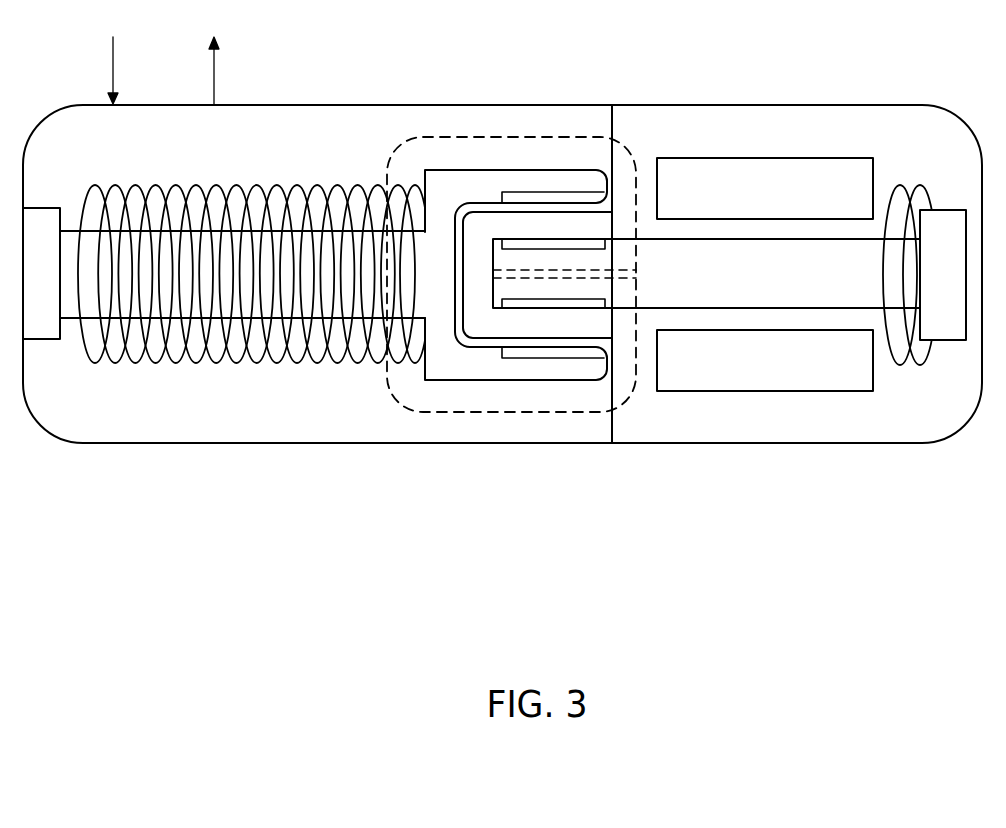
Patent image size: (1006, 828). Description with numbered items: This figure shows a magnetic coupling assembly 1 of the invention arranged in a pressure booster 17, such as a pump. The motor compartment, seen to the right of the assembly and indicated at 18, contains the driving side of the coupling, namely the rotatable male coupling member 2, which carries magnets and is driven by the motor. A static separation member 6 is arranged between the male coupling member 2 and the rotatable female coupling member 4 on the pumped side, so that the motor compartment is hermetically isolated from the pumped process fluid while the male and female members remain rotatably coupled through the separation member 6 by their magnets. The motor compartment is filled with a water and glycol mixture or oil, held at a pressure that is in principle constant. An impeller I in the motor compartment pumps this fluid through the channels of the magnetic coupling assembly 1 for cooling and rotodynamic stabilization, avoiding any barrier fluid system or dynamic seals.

The magnetic coupling assembly 1 is at (478, 137).
The male coupling member 2 is at (596, 278).
The female coupling member 4 is at (471, 362).
The static separation member 6 is at (612, 158).
The pressure booster 17 is at (502, 290).
The electric motor 18 is at (753, 130).
The impeller I is at (902, 186).